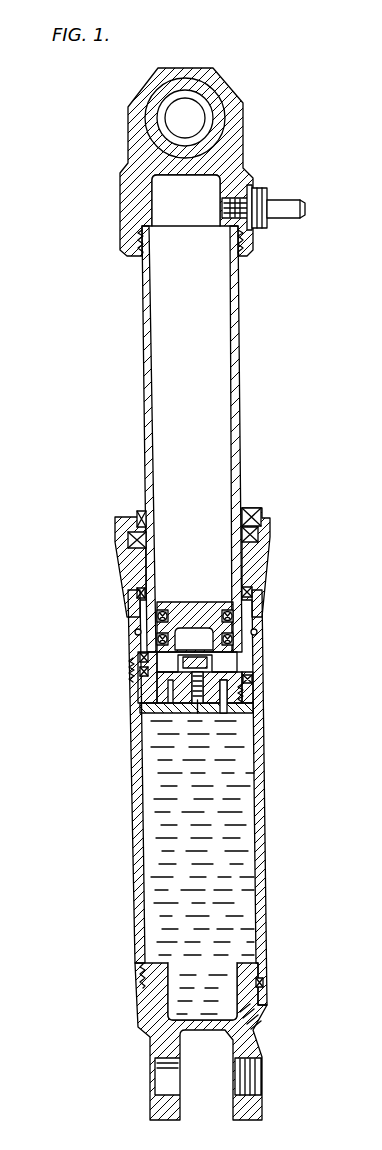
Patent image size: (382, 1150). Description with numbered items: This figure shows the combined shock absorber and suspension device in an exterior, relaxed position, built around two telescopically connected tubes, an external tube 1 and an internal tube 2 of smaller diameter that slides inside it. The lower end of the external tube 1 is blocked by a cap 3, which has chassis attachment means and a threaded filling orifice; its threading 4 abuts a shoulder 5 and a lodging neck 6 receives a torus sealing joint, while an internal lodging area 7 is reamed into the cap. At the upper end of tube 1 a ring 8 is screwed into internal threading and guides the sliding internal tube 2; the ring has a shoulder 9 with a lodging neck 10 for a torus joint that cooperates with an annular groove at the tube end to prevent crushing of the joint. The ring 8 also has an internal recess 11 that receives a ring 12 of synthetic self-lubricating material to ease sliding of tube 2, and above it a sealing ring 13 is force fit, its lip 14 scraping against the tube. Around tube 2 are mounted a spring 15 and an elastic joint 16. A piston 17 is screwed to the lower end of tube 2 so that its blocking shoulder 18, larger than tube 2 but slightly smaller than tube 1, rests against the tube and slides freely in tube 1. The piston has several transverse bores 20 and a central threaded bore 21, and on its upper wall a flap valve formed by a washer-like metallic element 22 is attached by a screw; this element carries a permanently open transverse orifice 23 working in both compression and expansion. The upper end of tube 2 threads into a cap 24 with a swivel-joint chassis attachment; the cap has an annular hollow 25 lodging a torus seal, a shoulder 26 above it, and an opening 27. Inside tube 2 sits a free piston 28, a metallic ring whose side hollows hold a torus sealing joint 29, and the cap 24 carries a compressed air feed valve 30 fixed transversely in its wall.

The external tube 1 is at (265, 818).
The internal tube 2 is at (237, 318).
The cap 3 is at (260, 1013).
The threading 4 is at (140, 963).
The shoulder 5 is at (140, 985).
The lodging neck 6 is at (265, 982).
The internal lodging area 7 is at (215, 980).
The ring 8 is at (138, 567).
The shoulder 9 is at (135, 632).
The lodging neck 10 is at (257, 632).
The internal recess 11 is at (127, 542).
The ring 12 is at (262, 538).
The sealing ring 13 is at (261, 517).
The lip 14 is at (142, 513).
The spring 15 is at (130, 667).
The elastic joint 16 is at (248, 690).
The piston 17 is at (155, 705).
The piston blocking shoulder 18 is at (248, 703).
The transverse bores 20 is at (223, 706).
The central threaded bore 21 is at (198, 711).
The metallic element 22 is at (157, 665).
The transverse orifice 23 is at (253, 675).
The cap 24 is at (233, 130).
The annular hollow 25 is at (252, 230).
The shoulder 26 is at (222, 234).
The opening 27 is at (180, 205).
The free piston 28 is at (173, 602).
The torus sealing joint 29 is at (225, 605).
The valve 30 is at (262, 188).